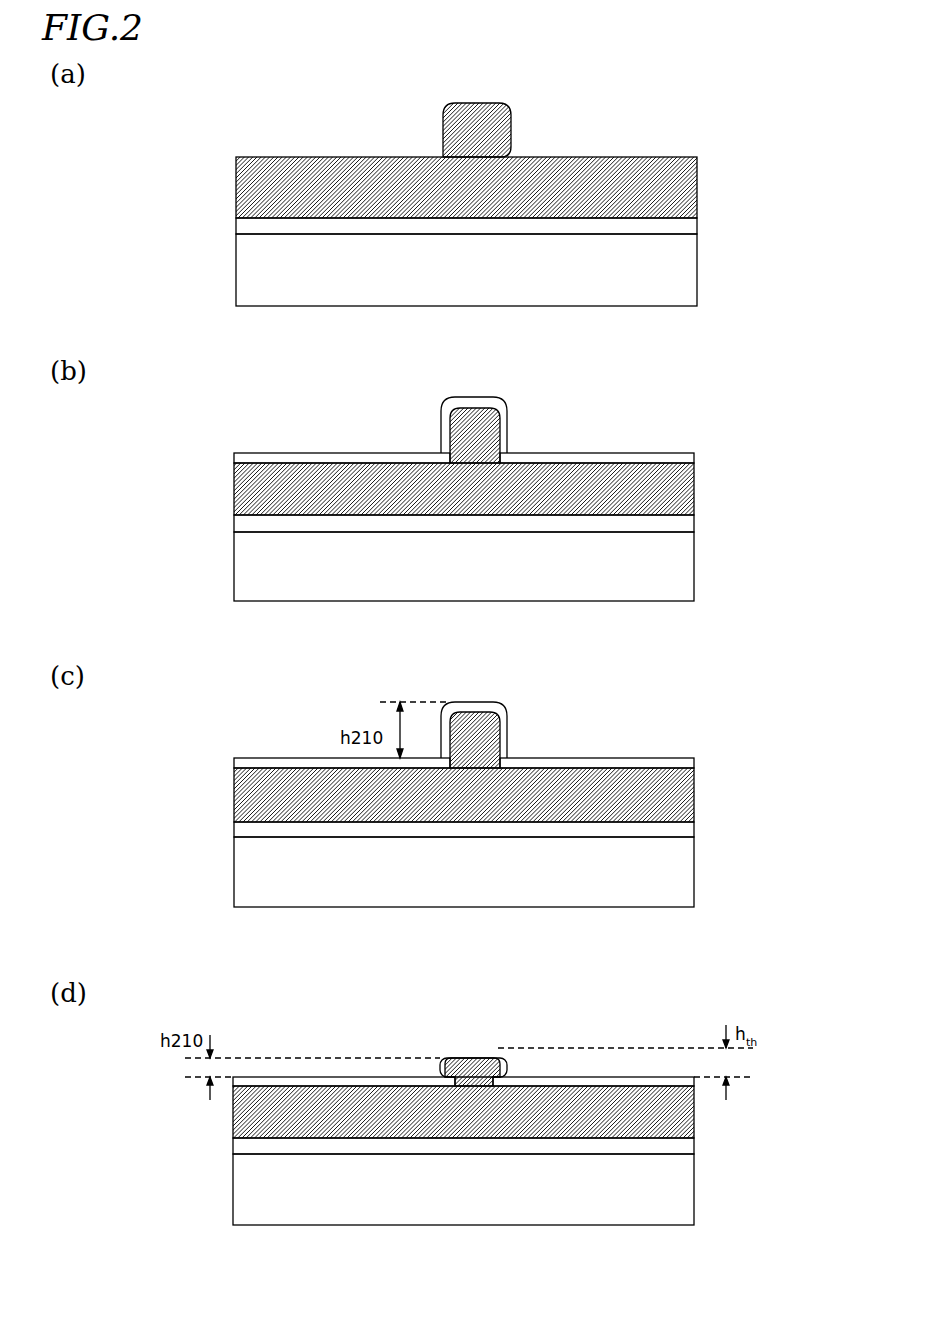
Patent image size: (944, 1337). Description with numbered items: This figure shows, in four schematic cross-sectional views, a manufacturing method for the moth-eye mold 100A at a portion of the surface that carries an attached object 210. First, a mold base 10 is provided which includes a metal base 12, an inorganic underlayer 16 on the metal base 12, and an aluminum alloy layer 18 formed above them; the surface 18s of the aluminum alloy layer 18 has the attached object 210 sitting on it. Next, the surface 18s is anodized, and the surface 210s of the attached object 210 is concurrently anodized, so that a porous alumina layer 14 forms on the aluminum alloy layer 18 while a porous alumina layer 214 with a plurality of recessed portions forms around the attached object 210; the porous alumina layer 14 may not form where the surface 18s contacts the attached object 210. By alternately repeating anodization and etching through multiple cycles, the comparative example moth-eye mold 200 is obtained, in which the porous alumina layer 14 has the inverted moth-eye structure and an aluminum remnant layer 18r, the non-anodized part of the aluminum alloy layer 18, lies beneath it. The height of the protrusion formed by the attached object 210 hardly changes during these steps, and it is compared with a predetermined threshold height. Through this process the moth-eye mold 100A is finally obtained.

The mold base 10 is at (800, 147).
The metal base 12 is at (685, 273).
The porous alumina layer 14 is at (688, 458).
The inorganic underlayer 16 is at (687, 230).
The aluminum alloy layer 18 is at (697, 197).
The surface of the aluminum alloy layer 18s is at (288, 157).
The aluminum remnant layer 18r is at (688, 802).
The comparative example moth-eye mold 200 is at (800, 725).
The moth-eye mold 100A is at (800, 1027).
The attached object 210 is at (492, 120).
The surface of the attached object 210s is at (443, 120).
The porous alumina layer 214 is at (446, 410).